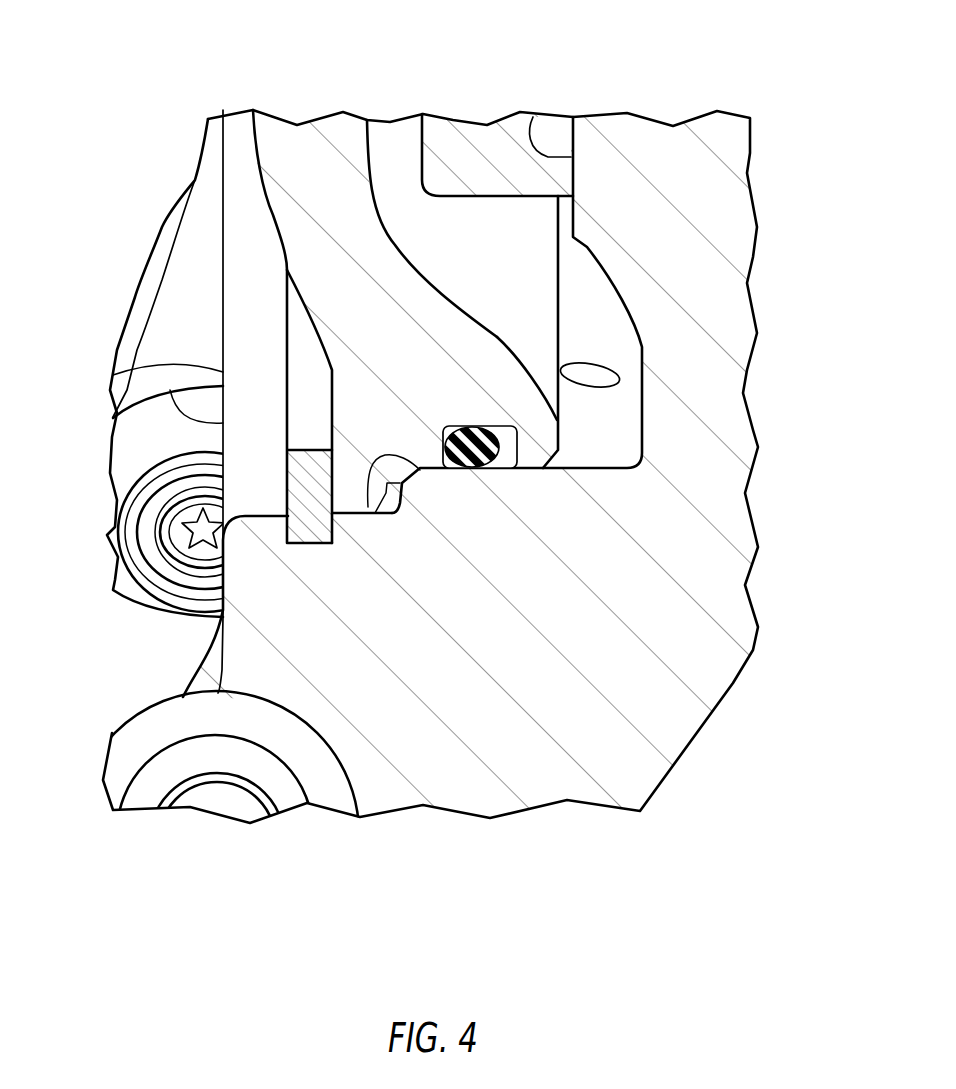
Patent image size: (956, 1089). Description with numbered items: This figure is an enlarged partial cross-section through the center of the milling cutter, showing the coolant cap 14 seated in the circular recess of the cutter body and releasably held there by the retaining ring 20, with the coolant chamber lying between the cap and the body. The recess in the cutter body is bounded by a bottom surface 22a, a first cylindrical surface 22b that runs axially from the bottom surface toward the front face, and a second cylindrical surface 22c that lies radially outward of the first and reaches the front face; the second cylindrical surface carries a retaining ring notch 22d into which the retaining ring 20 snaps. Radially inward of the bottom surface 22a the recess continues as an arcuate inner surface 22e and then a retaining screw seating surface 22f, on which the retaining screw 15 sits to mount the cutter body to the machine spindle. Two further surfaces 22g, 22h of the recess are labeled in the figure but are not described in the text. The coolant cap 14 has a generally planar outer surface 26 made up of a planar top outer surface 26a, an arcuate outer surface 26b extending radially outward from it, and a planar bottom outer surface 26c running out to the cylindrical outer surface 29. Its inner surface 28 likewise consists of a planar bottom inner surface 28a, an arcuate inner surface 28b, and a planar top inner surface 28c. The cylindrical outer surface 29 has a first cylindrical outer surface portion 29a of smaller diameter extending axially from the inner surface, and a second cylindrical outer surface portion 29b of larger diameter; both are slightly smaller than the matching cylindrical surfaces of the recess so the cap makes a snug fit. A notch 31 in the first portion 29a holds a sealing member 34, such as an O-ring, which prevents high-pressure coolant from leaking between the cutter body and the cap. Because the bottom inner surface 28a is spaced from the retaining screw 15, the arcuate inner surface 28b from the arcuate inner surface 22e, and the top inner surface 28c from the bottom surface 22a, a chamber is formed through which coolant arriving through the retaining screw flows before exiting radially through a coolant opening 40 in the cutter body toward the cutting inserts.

The coolant cap 14 is at (240, 213).
The retaining screw 15 is at (506, 133).
The retaining ring 20 is at (272, 483).
The bottom surface 22a is at (633, 404).
The first cylindrical surface 22b is at (593, 470).
The second cylindrical surface 22c is at (415, 470).
The retaining ring notch 22d is at (361, 514).
The arcuate inner surface 22e is at (315, 543).
The retaining screw seating surface 22f is at (263, 516).
The housing curved surface 22g is at (593, 257).
The housing notch 22h is at (555, 118).
The outer surface 26 is at (242, 166).
The top outer surface 26a is at (255, 137).
The arcuate outer surface 26b is at (290, 285).
The bottom outer surface 26c is at (330, 430).
The inner surface 28 is at (398, 220).
The bottom inner surface 28a is at (372, 137).
The arcuate inner surface 28b is at (467, 313).
The top inner surface 28c is at (400, 483).
The cylindrical outer surface 29 is at (353, 533).
The first cylindrical outer surface portion 29a is at (537, 467).
The second cylindrical outer surface portion 29b is at (347, 510).
The notch 31 is at (445, 425).
The sealing member 34 is at (478, 427).
The coolant opening 40 is at (592, 375).